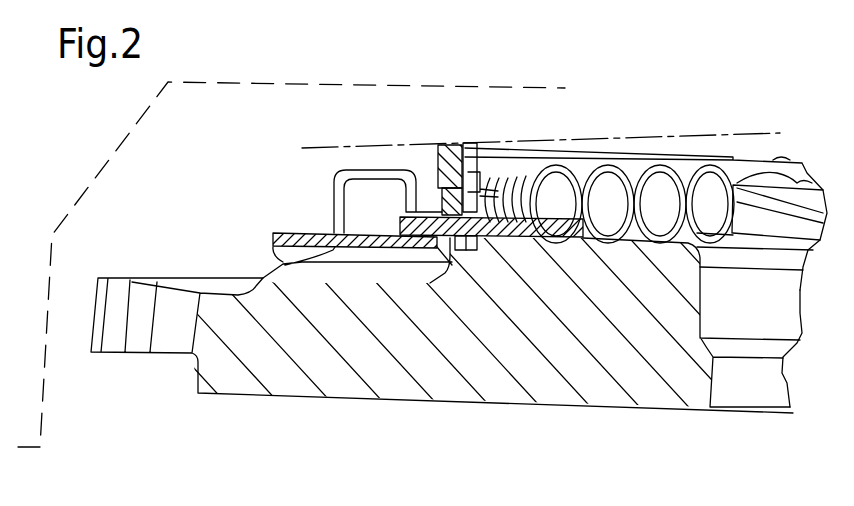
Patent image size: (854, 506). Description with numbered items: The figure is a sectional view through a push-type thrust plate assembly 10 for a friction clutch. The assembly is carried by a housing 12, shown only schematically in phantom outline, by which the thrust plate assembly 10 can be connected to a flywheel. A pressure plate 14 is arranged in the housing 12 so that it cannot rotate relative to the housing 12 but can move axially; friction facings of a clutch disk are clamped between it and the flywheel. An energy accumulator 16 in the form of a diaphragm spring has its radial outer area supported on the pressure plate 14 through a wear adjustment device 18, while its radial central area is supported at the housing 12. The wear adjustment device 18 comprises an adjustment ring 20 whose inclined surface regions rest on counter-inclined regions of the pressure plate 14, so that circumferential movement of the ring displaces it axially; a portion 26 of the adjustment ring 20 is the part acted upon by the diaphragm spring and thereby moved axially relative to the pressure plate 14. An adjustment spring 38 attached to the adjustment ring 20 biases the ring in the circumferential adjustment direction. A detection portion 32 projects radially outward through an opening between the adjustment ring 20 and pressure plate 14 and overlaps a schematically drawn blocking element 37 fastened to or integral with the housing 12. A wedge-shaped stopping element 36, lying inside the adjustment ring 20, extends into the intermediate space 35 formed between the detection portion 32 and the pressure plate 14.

The thrust plate assembly 10 is at (682, 72).
The housing 12 is at (263, 84).
The pressure plate 14 is at (788, 387).
The energy accumulator 16 is at (740, 134).
The wear adjustment device 18 is at (403, 153).
The adjustment ring 20 is at (445, 152).
The portion of the adjustment ring 26 is at (460, 150).
The detection portion 32 is at (400, 217).
The intermediate space 35 is at (480, 242).
The stopping element 36 is at (455, 249).
The blocking element 37 is at (290, 232).
The adjustment spring 38 is at (722, 160).